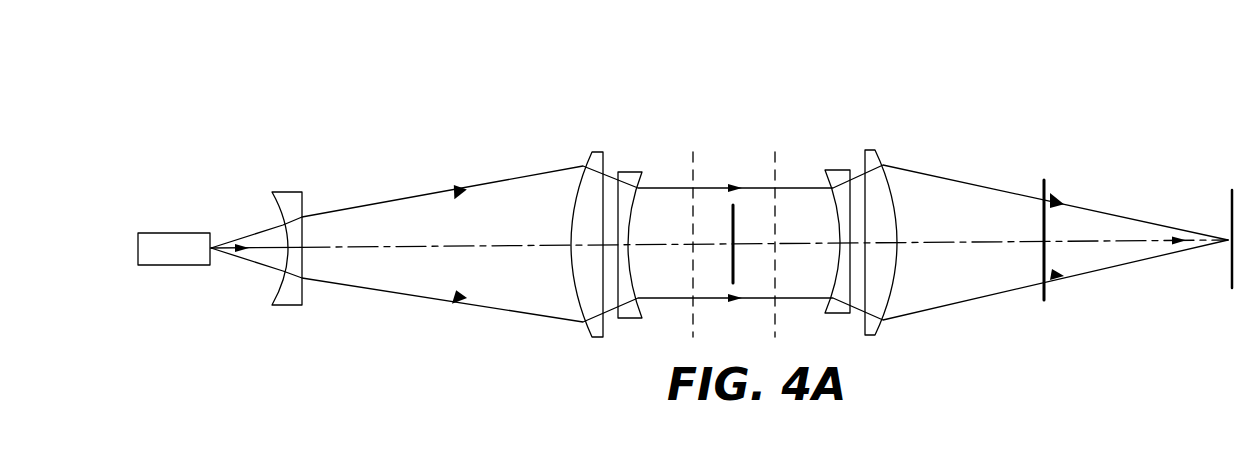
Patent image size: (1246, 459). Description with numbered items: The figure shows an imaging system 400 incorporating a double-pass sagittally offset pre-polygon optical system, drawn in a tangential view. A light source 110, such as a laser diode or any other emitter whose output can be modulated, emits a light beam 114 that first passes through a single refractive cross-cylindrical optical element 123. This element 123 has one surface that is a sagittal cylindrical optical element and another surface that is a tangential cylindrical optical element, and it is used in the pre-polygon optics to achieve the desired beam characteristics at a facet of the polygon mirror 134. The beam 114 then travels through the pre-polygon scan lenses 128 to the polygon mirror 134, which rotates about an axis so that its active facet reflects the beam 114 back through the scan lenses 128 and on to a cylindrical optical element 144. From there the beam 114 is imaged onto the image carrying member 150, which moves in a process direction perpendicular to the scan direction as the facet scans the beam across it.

The imaging system 400 is at (1100, 71).
The light source 110 is at (152, 233).
The light beam 114 is at (262, 265).
The refractive cross-cylindrical optical element 123 is at (287, 192).
The pre-polygon scan lenses 128 is at (645, 144).
The polygon mirror 134 is at (732, 207).
The cylindrical optical element 144 is at (1047, 192).
The image carrying member 150 is at (1231, 277).